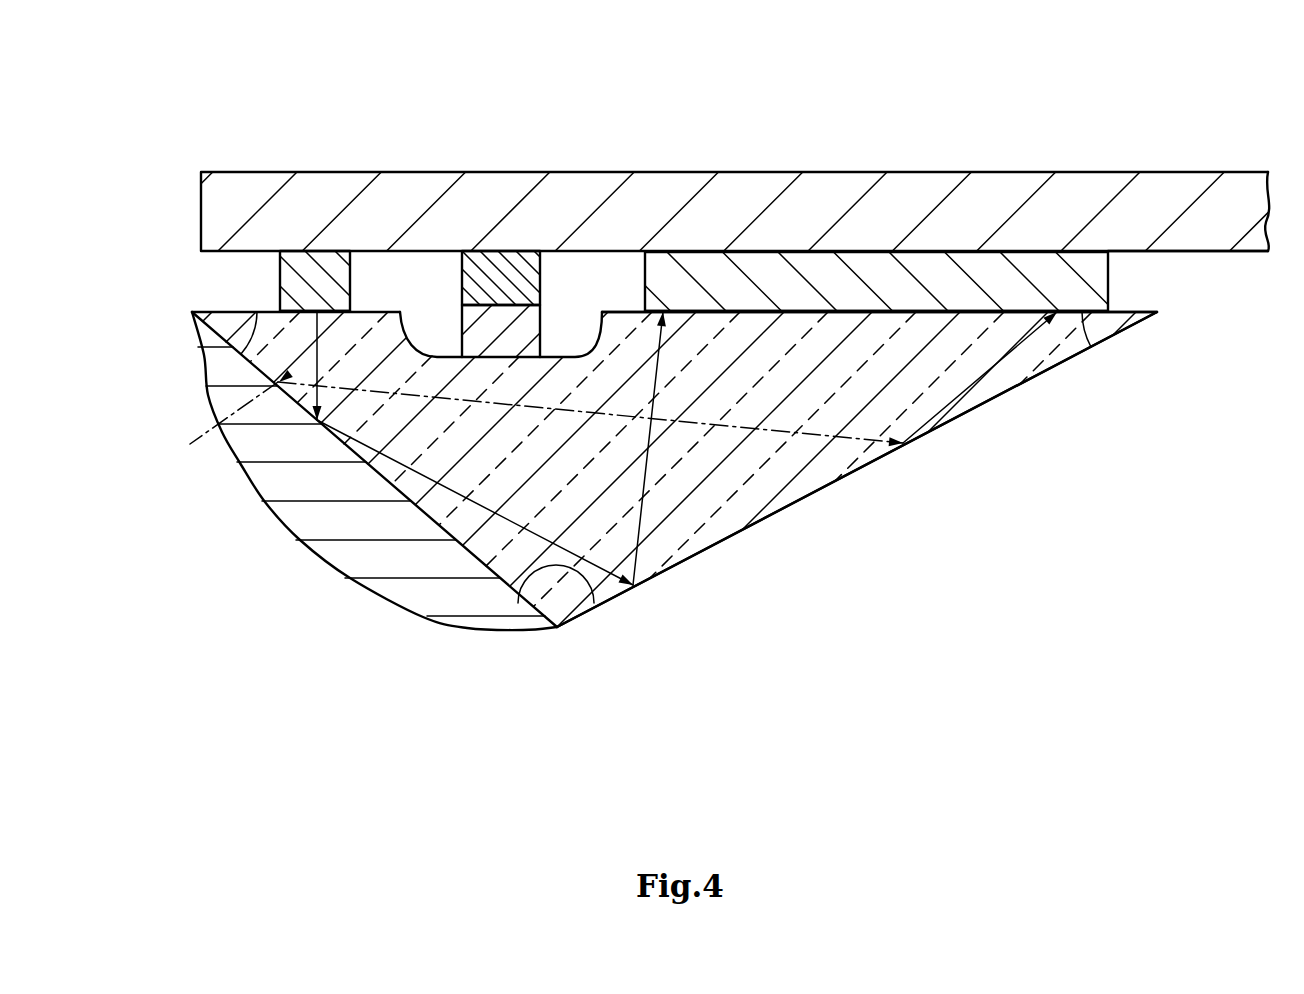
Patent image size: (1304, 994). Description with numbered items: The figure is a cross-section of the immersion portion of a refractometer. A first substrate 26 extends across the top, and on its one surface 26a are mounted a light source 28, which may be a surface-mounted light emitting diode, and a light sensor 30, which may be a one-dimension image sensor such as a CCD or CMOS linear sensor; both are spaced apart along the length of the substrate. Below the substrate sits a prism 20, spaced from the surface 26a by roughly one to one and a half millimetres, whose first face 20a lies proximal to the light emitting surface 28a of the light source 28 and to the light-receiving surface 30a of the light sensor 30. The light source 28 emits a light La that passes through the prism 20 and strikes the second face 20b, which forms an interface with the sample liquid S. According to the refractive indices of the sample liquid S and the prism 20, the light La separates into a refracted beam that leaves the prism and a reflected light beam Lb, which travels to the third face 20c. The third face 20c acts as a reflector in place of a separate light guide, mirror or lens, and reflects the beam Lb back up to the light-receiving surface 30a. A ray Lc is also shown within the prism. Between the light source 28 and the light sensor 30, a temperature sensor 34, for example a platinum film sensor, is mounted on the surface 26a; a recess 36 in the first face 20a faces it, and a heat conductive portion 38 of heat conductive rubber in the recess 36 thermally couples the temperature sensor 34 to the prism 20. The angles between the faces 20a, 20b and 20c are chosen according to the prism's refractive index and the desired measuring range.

The prism 20 is at (613, 605).
The first face 20a is at (1023, 313).
The second face 20b is at (392, 485).
The third face 20c is at (733, 535).
The first substrate 26 is at (1030, 172).
The surface of the first substrate 26a is at (1187, 252).
The light source 28 is at (280, 263).
The light emitting surface 28a is at (344, 312).
The light sensor 30 is at (645, 285).
The light-receiving surface 30a is at (828, 311).
The temperature sensor 34 is at (457, 280).
The recess 36 is at (568, 362).
The heat conductive portion 38 is at (543, 325).
The sample liquid S is at (251, 487).
The light La is at (200, 441).
The reflected light beam Lb is at (440, 330).
The light ray Lc is at (647, 462).